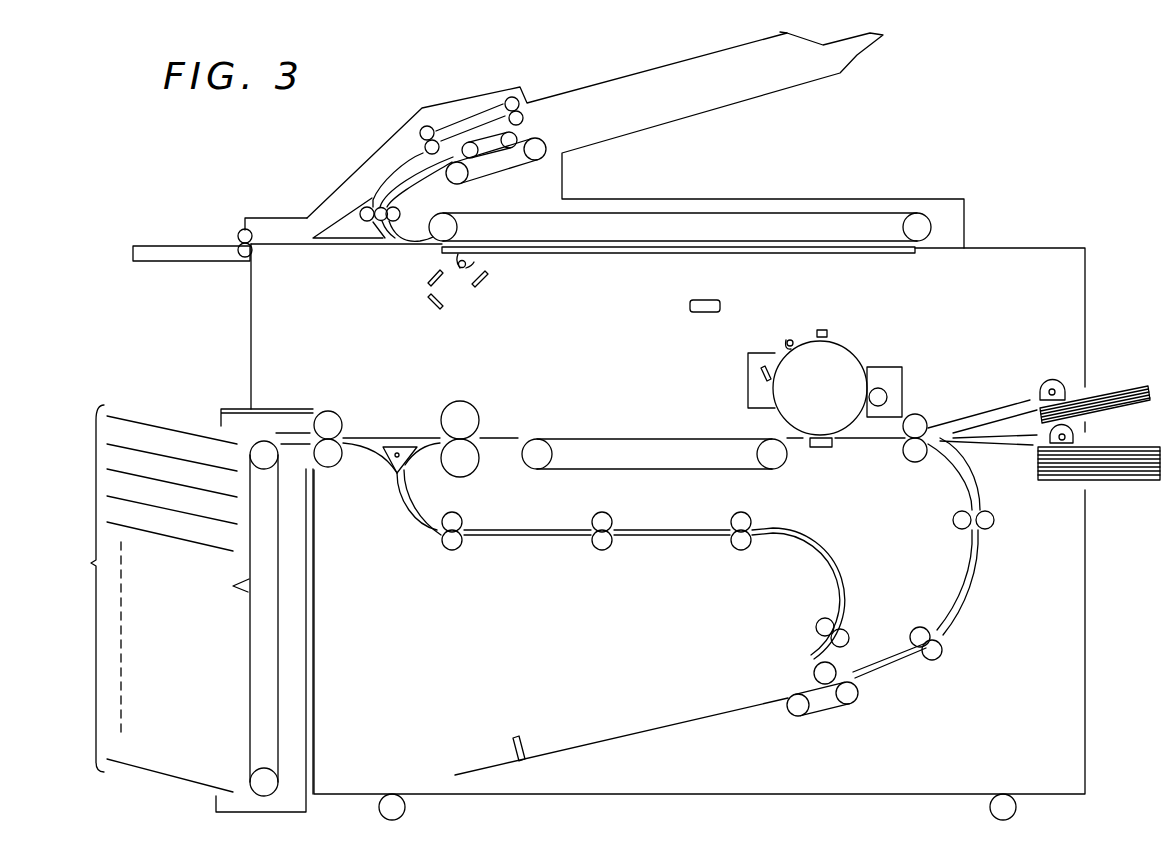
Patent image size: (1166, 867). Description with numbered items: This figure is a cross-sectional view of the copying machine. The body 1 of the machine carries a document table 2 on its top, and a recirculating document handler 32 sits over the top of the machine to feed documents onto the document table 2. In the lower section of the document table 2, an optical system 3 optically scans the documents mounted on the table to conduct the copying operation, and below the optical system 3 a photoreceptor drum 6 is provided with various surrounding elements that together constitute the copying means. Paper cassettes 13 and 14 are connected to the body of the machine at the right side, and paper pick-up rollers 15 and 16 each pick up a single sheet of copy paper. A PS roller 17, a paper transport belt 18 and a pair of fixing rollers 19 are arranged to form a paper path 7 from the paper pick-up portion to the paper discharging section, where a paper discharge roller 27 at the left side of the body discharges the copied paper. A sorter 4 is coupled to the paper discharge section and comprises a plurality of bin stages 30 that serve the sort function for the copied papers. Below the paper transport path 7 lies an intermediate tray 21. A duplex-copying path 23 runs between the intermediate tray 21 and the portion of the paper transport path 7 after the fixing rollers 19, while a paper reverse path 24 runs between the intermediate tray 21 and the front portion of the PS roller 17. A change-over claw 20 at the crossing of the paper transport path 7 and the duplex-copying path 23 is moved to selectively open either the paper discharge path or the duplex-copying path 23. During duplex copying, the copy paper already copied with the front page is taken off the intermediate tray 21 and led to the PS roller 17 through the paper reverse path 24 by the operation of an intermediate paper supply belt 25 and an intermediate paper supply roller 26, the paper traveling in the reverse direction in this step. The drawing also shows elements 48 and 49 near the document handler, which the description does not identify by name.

The body 1 is at (1088, 273).
The document table 2 is at (847, 255).
The optical system 3 is at (450, 262).
The sorter 4 is at (217, 417).
The photoreceptor drum 6 is at (857, 363).
The paper path 7 is at (667, 437).
The paper cassette 13 is at (1148, 386).
The paper cassette 14 is at (1133, 482).
The paper pick-up roller 15 is at (1053, 380).
The paper pick-up roller 16 is at (1075, 427).
The PS roller 17 is at (922, 418).
The paper transport belt 18 is at (663, 470).
The fixing rollers 19 is at (480, 463).
The change-over claw 20 is at (391, 467).
The intermediate tray 21 is at (700, 720).
The duplex-copying path 23 is at (553, 545).
The paper reverse path 24 is at (980, 588).
The intermediate paper supply belt 25 is at (828, 708).
The intermediate paper supply roller 26 is at (835, 670).
The paper discharge roller 27 is at (337, 415).
The bin stages 30 is at (91, 563).
The recirculating document handler 32 is at (677, 165).
The original discharge tray 48 is at (192, 262).
The original discharge rollers 49 is at (242, 236).